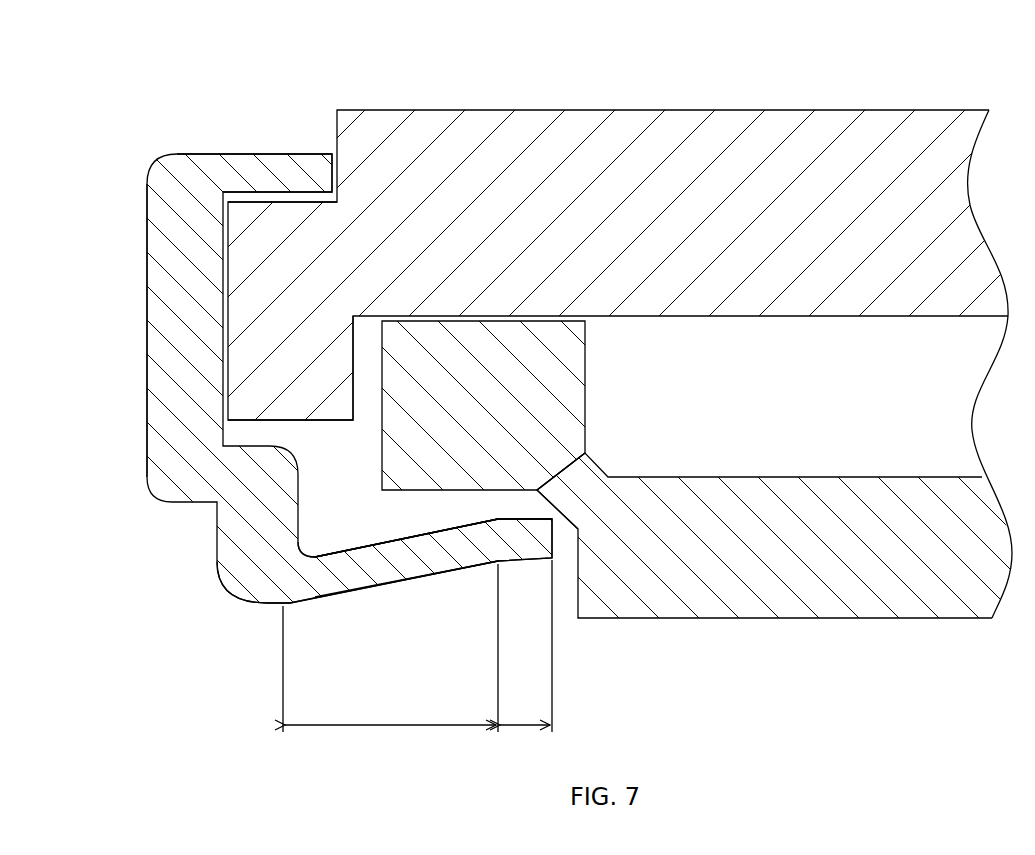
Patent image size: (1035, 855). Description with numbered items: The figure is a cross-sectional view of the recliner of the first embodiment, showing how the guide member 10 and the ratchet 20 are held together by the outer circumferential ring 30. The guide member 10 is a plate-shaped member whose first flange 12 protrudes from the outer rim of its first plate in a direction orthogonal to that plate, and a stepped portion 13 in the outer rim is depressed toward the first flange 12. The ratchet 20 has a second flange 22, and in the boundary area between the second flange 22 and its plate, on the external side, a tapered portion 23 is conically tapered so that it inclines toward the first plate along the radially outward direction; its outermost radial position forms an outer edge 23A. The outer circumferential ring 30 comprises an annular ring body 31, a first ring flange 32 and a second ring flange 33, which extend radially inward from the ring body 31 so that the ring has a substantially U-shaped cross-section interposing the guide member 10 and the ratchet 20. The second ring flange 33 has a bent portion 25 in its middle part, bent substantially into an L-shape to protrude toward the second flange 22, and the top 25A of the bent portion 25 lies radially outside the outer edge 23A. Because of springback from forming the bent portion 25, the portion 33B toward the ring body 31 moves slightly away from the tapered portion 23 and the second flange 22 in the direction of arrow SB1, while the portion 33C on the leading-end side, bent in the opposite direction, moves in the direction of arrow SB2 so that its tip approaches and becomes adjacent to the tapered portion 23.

The guide member 10 is at (874, 108).
The first flange 12 is at (335, 424).
The stepped portion 13 is at (297, 200).
The ratchet 20 is at (898, 621).
The second flange 22 is at (588, 368).
The tapered portion 23 is at (560, 506).
The outer edge 23A is at (540, 485).
The bent portion 25 is at (493, 567).
The top 25A is at (495, 518).
The outer circumferential ring 30 is at (145, 228).
The ring body 31 is at (145, 331).
The first ring flange 32 is at (221, 151).
The second ring flange 33 is at (313, 607).
The portion toward the ring body 33B is at (390, 648).
The portion on the leading-end side 33C is at (526, 646).
The arrow SB1 is at (350, 530).
The arrow SB2 is at (522, 502).